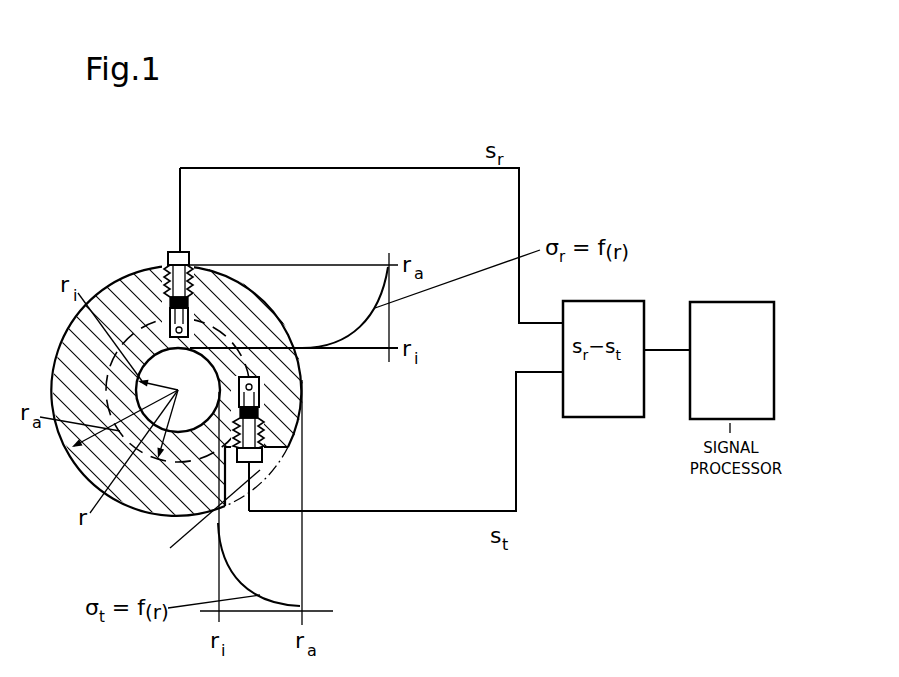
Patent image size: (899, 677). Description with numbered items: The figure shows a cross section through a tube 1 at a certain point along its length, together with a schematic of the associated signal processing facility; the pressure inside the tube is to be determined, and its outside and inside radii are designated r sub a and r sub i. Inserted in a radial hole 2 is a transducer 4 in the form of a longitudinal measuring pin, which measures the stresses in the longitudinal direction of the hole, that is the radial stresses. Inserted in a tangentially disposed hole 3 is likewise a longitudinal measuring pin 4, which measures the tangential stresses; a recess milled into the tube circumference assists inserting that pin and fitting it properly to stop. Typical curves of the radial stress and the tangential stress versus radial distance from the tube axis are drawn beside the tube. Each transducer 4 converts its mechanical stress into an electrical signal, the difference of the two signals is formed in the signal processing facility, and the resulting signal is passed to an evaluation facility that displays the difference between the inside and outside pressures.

The tube 1 is at (239, 320).
The radial hole 2 is at (194, 330).
The tangentially disposed hole 3 is at (309, 479).
The transducer (longitudinal measuring pin) 4 is at (163, 292).